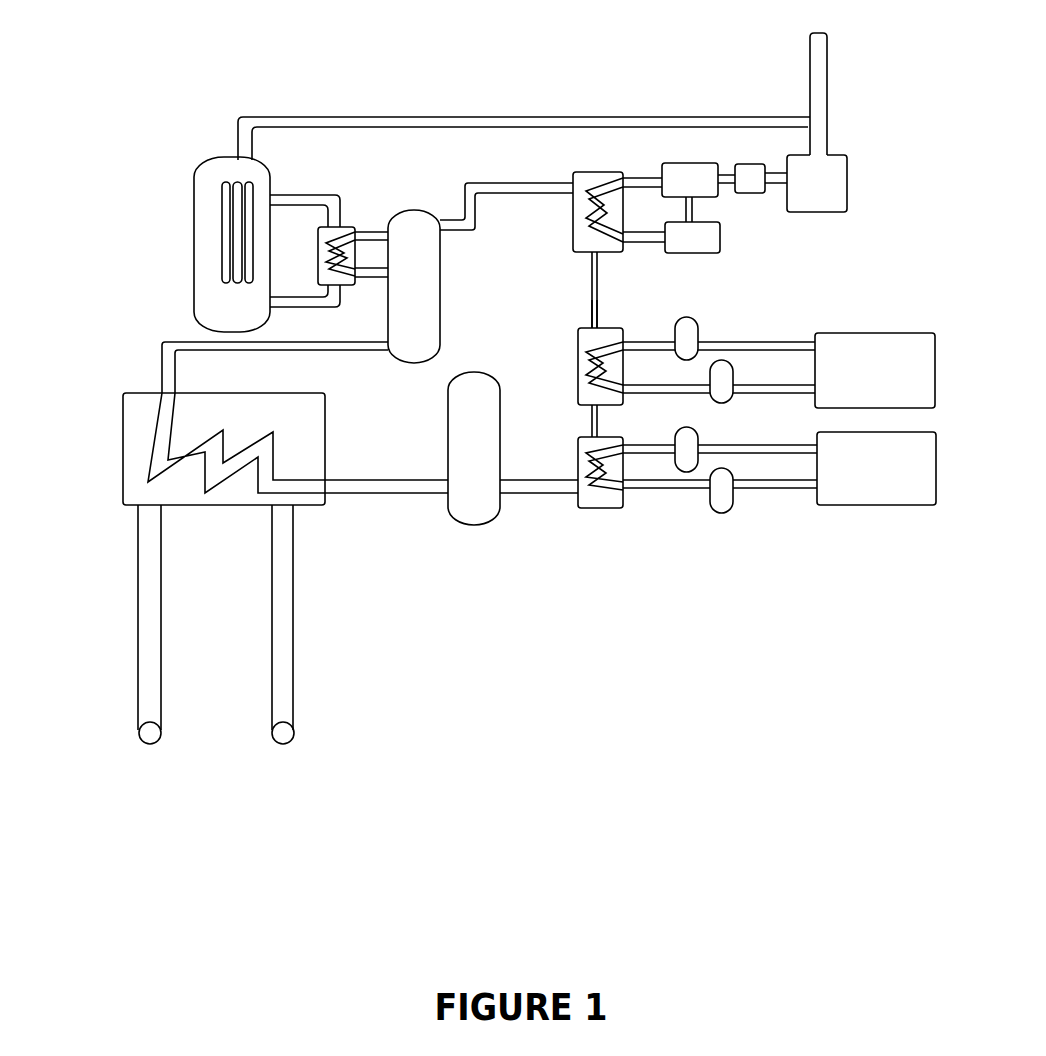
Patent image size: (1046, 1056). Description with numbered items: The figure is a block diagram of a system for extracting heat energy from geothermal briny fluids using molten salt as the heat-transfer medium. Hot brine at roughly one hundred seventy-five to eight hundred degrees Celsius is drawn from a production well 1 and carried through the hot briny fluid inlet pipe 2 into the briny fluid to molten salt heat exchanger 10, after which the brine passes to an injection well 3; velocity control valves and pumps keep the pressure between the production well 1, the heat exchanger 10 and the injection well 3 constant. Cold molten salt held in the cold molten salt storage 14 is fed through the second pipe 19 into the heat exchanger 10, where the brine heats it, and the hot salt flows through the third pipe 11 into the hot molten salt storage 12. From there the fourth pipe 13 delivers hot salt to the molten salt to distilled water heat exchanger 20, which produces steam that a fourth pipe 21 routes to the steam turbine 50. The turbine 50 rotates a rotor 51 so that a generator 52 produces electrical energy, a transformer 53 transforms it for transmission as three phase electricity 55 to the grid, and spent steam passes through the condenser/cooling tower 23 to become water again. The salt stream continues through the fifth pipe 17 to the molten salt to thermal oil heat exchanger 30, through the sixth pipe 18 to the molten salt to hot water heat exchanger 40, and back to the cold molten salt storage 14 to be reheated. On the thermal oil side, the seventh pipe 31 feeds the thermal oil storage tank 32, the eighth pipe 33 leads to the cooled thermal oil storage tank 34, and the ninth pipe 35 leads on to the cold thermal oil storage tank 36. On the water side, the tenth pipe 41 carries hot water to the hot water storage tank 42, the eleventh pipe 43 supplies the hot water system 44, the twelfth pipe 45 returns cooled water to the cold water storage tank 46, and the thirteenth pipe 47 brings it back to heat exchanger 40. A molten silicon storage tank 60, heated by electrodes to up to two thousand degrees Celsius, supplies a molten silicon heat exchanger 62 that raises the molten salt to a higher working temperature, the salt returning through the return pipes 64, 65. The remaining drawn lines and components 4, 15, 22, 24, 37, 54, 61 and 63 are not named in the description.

The production well 1 is at (142, 726).
The hot briny fluid inlet pipe 2 is at (291, 726).
The injection well 3 is at (146, 586).
The second exhaust pipe 4 is at (291, 592).
The briny fluid to molten salt heat exchanger 10 is at (134, 419).
The third pipe 11 is at (168, 336).
The hot molten salt storage 12 is at (443, 298).
The fourth pipe 13 is at (505, 197).
The cold molten salt storage 14 is at (484, 514).
The line 15 is at (584, 303).
The fifth pipe 17 is at (584, 417).
The sixth pipe 18 is at (543, 500).
The second pipe 19 is at (400, 498).
The molten salt to distilled water heat exchanger 20 is at (593, 170).
The fourth pipe 21 is at (642, 176).
The pump 22 is at (696, 209).
The condenser/cooling tower 23 is at (642, 245).
The line 24 is at (598, 311).
The molten salt to thermal oil heat exchanger 30 is at (613, 333).
The seventh pipe 31 is at (661, 333).
The thermal oil storage tank 32 is at (701, 328).
The eighth pipe 33 is at (760, 340).
The cooled thermal oil storage tank 34 is at (875, 331).
The ninth pipe 35 is at (773, 395).
The cold thermal oil storage tank 36 is at (722, 404).
The line 37 is at (651, 395).
The molten salt to hot water heat exchanger 40 is at (595, 514).
The tenth pipe 41 is at (643, 458).
The hot water storage tank 42 is at (688, 475).
The eleventh pipe 43 is at (760, 458).
The hot water system 44 is at (901, 507).
The twelfth pipe 45 is at (801, 490).
The cold water storage tank 46 is at (726, 515).
The thirteenth pipe 47 is at (703, 492).
The steam turbine 50 is at (690, 161).
The rotor 51 is at (727, 167).
The generator 52 is at (758, 161).
The transformer 53 is at (778, 189).
The generator 54 is at (839, 164).
The three phase electricity 55 is at (420, 114).
The molten silicon storage tank 60 is at (350, 224).
The line 61 is at (299, 192).
The molten silicon heat exchanger 62 is at (303, 313).
The line 63 is at (370, 231).
The return pipe 64 is at (373, 280).
The return pipe 65 is at (199, 162).